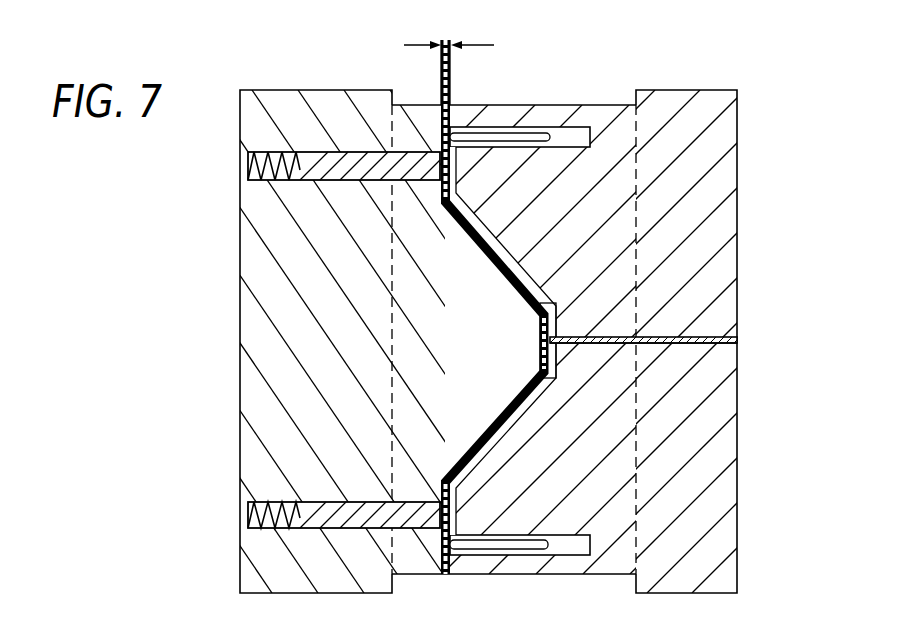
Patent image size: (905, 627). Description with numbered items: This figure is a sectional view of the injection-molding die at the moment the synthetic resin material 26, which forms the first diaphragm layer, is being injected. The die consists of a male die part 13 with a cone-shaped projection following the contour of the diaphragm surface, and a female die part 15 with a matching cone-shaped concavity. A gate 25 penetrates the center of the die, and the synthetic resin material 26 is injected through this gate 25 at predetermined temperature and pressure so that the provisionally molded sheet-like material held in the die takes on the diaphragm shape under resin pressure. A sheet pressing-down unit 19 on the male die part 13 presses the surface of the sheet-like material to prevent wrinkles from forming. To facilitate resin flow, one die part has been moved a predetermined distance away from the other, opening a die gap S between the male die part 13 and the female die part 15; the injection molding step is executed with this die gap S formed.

The male die part 13 is at (298, 84).
The female die part 15 is at (694, 78).
The sheet pressing-down unit 19 is at (345, 162).
The gate 25 is at (708, 336).
The synthetic resin material 26 is at (656, 346).
The die gap S is at (449, 35).